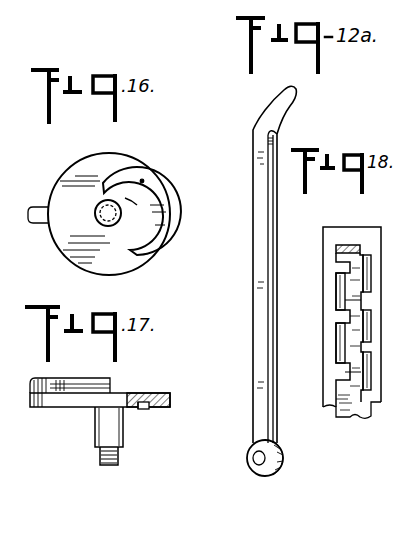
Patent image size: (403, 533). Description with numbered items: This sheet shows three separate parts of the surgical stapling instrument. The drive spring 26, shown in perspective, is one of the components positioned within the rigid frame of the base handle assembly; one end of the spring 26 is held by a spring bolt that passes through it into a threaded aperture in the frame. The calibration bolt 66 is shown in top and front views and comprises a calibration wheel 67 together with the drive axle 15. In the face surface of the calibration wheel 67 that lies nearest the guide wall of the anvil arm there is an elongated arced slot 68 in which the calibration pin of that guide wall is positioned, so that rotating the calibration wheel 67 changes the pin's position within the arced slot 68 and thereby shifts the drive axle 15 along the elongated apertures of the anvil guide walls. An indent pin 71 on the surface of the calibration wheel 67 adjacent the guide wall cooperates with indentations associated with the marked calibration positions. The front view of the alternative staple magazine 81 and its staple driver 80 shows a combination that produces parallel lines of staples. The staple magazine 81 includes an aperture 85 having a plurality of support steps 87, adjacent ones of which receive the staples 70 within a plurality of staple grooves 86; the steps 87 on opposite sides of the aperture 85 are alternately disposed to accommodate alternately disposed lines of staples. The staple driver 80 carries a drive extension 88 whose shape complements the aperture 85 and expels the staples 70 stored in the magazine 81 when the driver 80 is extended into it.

In FIG. 16, the drive axle 15 is at (95, 212).
In FIG. 17, the drive axle 15 is at (105, 425).
In FIG. 16, the calibration bolt 66 is at (101, 145).
In FIG. 17, the calibration bolt 66 is at (138, 385).
In FIG. 16, the calibration wheel 67 is at (125, 165).
In FIG. 17, the calibration wheel 67 is at (160, 396).
In FIG. 16, the arced slot 68 is at (138, 197).
In FIG. 17, the arced slot 68 is at (150, 405).
In FIG. 16, the indent pin 71 is at (143, 181).
In FIG. 17, the indent pin 71 is at (140, 409).
In FIG. 12A, the drive spring 26 is at (253, 258).
In FIG. 18, the staple magazine 81 is at (344, 226).
In FIG. 18, the aperture 85 is at (340, 252).
In FIG. 18, the staple driver 80 is at (348, 260).
In FIG. 18, the staples 70 is at (336, 288).
In FIG. 18, the support steps 87 is at (362, 298).
In FIG. 18, the staple grooves 86 is at (366, 257).
In FIG. 18, the drive extension 88 is at (352, 413).